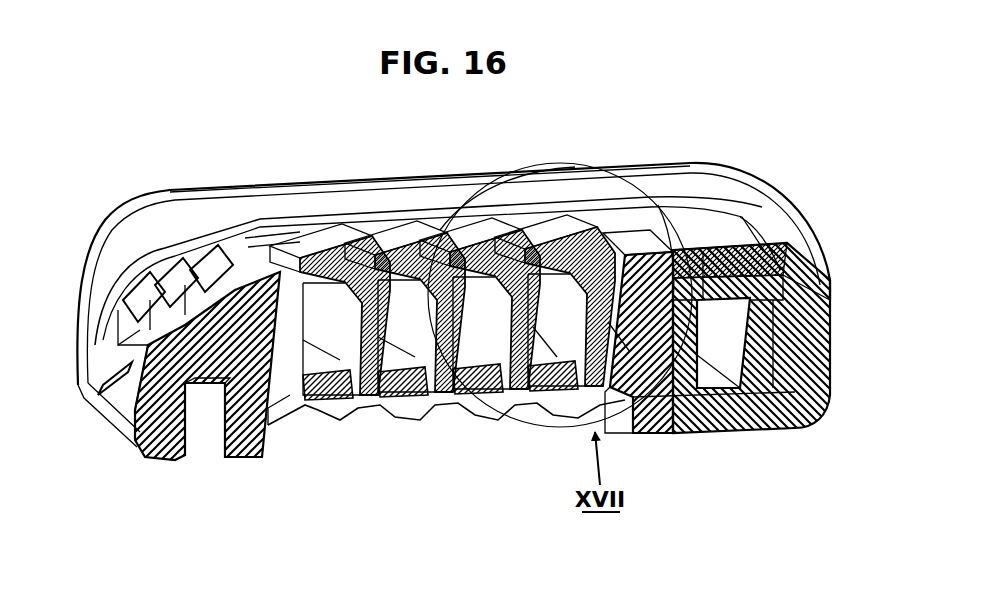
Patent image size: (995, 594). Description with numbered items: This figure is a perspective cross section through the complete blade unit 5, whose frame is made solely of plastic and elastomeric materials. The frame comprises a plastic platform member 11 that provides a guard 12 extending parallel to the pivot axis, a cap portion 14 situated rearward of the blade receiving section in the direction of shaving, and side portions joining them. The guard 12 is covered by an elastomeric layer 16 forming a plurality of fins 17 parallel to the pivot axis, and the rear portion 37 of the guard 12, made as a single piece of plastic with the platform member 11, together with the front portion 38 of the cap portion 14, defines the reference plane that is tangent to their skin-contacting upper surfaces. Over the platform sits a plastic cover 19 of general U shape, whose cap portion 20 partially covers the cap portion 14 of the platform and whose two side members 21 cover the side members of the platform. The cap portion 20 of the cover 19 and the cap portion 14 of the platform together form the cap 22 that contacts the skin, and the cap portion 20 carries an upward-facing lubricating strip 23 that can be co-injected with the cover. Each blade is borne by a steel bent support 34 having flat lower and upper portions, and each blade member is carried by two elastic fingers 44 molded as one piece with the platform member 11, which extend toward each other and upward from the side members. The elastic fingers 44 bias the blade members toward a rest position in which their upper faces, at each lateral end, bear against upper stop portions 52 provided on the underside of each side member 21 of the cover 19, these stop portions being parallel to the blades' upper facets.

The blade unit 5 is at (112, 88).
The platform member 11 is at (145, 464).
The guard 12 is at (103, 386).
The cap portion 14 is at (763, 412).
The elastomeric layer 16 is at (143, 352).
The fins 17 is at (222, 248).
The cover 19 is at (724, 177).
The cap portion of the cover 20 is at (787, 229).
The side members of the cover 21 is at (372, 176).
The cap 22 is at (670, 198).
The lubricating strip 23 is at (760, 208).
The bent support 34 is at (418, 332).
The rear portion of the guard 37 is at (247, 236).
The front portion of the cap portion 38 is at (640, 232).
The elastic fingers 44 is at (540, 400).
The upper stop portions 52 is at (308, 245).